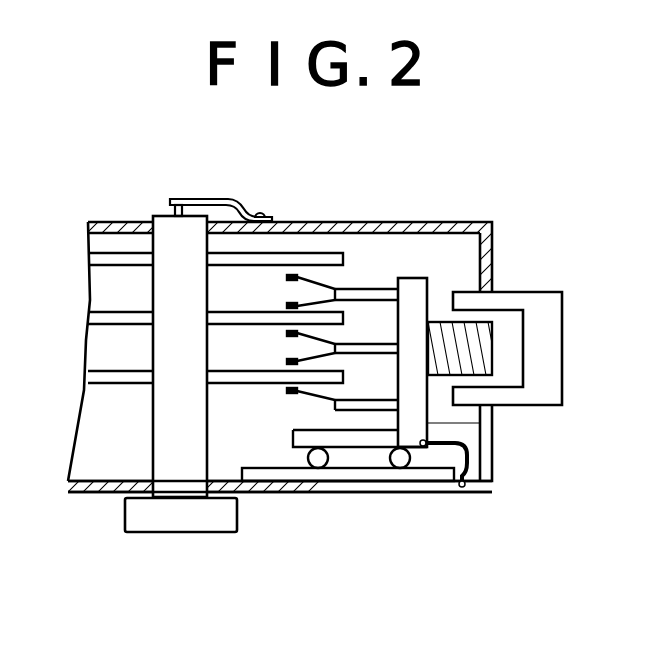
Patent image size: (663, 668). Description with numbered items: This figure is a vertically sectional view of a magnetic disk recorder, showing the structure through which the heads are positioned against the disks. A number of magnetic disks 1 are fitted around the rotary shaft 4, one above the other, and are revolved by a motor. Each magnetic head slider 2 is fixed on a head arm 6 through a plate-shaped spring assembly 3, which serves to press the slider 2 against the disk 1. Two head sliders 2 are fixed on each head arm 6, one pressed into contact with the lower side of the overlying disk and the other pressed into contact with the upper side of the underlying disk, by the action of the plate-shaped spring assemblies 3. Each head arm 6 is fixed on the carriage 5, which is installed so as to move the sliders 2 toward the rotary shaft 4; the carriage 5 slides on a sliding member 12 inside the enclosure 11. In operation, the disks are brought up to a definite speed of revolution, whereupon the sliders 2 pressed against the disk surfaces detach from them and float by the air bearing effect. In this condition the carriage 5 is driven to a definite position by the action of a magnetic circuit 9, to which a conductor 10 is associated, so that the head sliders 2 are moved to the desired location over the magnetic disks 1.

The magnetic disk 1 is at (298, 253).
The magnetic head slider 2 is at (290, 391).
The spring assembly 3 is at (323, 278).
The rotary shaft 4 is at (152, 438).
The carriage 5 is at (490, 428).
The head arm 6 is at (385, 287).
The magnetic circuit 9 is at (522, 405).
The conductor 10 is at (437, 447).
The enclosure 11 is at (292, 493).
The sliding member 12 is at (367, 475).